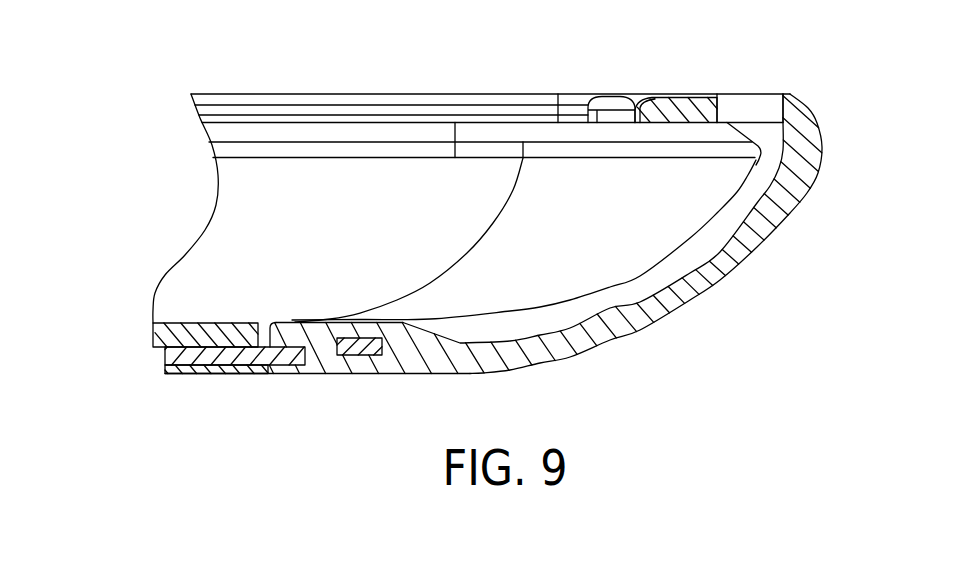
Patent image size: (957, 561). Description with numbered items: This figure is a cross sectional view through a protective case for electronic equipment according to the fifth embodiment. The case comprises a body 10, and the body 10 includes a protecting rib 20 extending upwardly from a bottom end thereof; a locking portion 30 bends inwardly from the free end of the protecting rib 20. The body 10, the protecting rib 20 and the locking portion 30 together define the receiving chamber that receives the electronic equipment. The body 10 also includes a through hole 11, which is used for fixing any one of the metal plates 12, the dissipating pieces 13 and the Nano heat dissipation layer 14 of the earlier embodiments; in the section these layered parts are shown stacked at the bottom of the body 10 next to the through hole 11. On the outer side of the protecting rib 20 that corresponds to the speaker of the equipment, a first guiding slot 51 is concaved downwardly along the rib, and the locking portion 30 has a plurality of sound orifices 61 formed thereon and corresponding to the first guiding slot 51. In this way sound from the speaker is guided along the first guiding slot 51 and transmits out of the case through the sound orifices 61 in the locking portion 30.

The body 10 is at (312, 363).
The through hole 11 is at (265, 338).
The metal plate 12 is at (192, 353).
The dissipating piece 13 is at (172, 333).
The Nano heat dissipation layer 14 is at (223, 372).
The protecting rib 20 is at (727, 260).
The locking portion 30 is at (688, 108).
The first guiding slot 51 is at (597, 305).
The sound orifices 61 is at (758, 113).